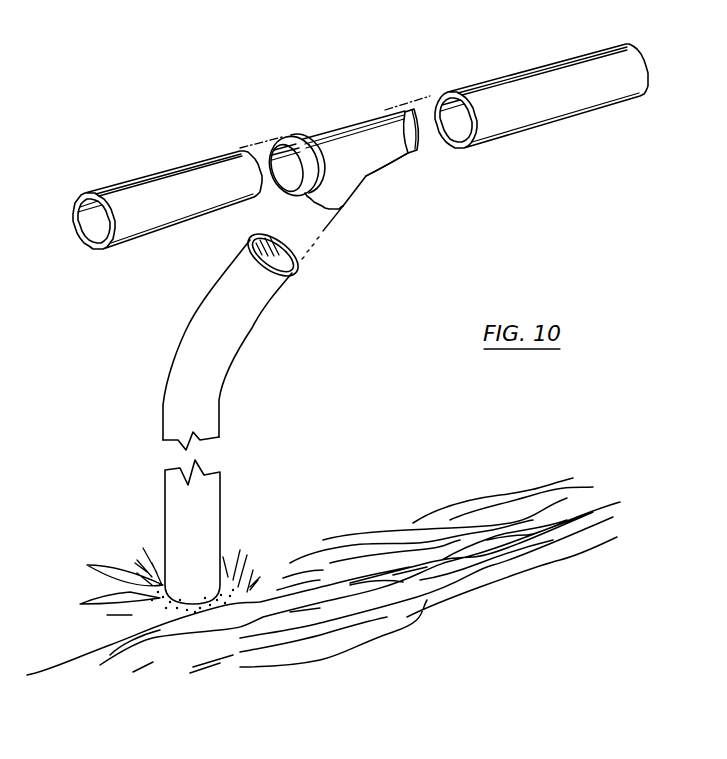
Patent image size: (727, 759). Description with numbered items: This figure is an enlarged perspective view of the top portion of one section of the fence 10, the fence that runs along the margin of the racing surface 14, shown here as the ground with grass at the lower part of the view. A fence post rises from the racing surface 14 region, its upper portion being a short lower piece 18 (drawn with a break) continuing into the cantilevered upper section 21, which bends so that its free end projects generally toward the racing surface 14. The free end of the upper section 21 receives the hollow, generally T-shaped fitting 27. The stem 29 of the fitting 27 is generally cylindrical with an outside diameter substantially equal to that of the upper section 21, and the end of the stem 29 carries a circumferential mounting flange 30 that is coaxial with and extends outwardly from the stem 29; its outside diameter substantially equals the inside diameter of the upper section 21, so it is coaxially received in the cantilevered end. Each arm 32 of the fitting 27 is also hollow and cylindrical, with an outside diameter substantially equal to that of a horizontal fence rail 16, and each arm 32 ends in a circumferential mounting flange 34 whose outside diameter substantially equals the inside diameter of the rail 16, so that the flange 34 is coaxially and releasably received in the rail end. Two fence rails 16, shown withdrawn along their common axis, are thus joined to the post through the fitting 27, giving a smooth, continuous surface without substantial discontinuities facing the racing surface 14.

The fence 10 is at (257, 85).
The racing surface 14 is at (415, 521).
The horizontal fence rail 16 is at (172, 171).
The riser pipe 18 is at (221, 511).
The upper section 21 is at (262, 313).
The T-shaped fitting 27 is at (350, 137).
The stem 29 is at (362, 178).
The circumferential mounting flange 30 is at (325, 222).
The arm 32 is at (314, 129).
The circumferential mounting flange 34 is at (268, 143).